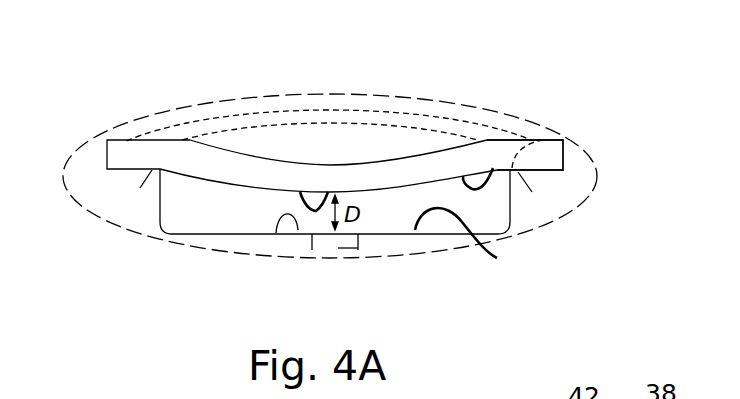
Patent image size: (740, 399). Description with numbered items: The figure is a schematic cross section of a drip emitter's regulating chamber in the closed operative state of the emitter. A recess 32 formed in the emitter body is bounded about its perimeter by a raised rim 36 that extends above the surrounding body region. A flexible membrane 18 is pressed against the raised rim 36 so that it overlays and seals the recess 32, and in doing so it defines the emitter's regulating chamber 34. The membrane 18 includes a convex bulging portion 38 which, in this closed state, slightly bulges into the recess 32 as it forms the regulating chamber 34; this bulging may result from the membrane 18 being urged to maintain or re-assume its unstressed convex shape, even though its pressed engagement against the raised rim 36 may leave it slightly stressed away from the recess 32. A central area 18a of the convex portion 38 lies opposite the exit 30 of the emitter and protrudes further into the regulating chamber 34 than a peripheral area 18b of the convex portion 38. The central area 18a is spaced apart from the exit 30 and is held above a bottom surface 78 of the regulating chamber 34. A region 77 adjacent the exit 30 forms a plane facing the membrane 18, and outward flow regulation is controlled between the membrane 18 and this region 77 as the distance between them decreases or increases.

The membrane 18 is at (332, 223).
The central area 18a is at (300, 192).
The peripheral area 18b is at (493, 168).
The exit 30 is at (338, 247).
The recess 32 is at (487, 215).
The regulating chamber 34 is at (222, 208).
The raised rim 36 is at (495, 141).
The convex bulging portion 38 is at (370, 191).
The region 77 is at (277, 233).
The bottom surface 78 is at (467, 252).